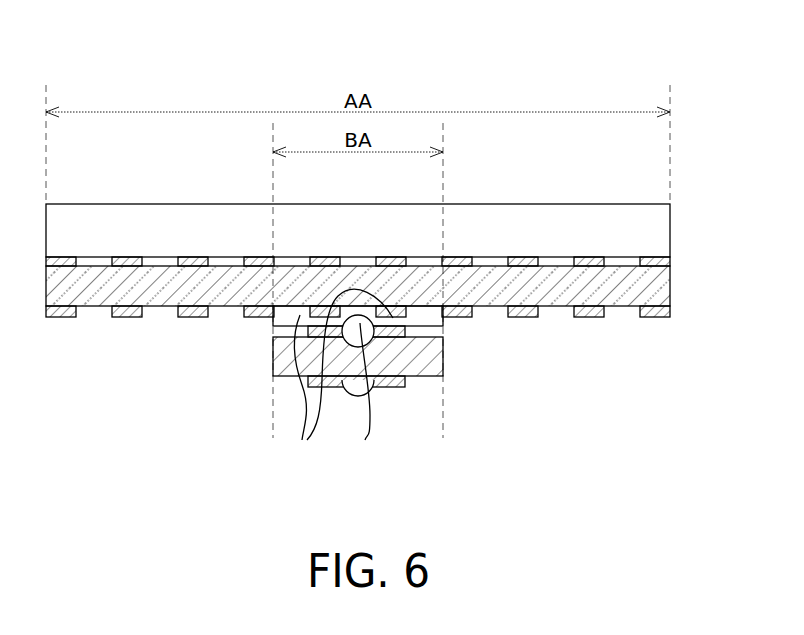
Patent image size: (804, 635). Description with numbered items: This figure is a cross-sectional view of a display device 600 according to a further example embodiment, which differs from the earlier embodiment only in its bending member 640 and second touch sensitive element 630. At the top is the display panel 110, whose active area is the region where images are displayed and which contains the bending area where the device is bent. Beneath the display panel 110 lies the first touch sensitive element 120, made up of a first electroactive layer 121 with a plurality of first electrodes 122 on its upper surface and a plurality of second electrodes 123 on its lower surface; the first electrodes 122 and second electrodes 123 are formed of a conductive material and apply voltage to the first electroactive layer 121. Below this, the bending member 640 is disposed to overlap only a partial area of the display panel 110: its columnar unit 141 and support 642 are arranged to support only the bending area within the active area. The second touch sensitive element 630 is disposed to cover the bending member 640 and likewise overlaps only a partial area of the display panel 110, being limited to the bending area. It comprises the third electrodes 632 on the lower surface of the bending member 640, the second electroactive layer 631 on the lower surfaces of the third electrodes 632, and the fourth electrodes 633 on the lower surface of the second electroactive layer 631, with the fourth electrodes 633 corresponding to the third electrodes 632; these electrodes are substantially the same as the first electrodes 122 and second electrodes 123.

The display device 600 is at (663, 58).
The display panel 110 is at (652, 229).
The first touch sensitive element 120 is at (412, 283).
The first electroactive layer 121 is at (655, 290).
The first electrodes 122 is at (655, 262).
The second electrodes 123 is at (655, 313).
The second touch sensitive element 630 is at (411, 351).
The second electroactive layer 631 is at (427, 357).
The third electrodes 632 is at (392, 332).
The fourth electrodes 633 is at (393, 380).
The bending member 640 is at (337, 398).
The support 642 is at (337, 379).
The columnar unit 141 is at (362, 396).